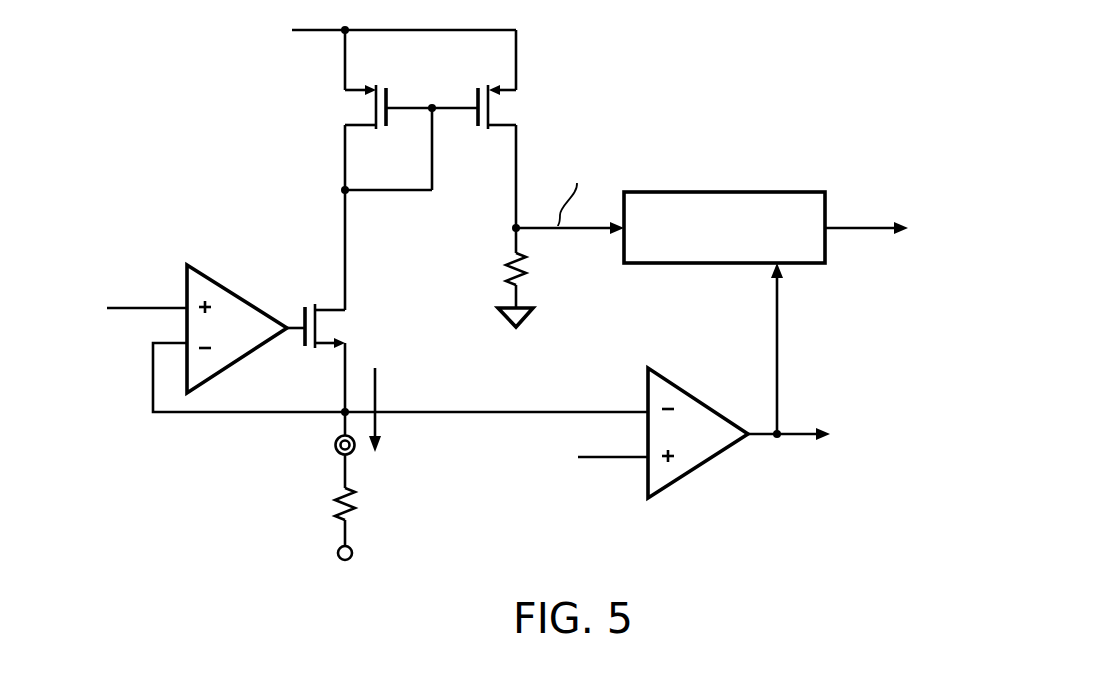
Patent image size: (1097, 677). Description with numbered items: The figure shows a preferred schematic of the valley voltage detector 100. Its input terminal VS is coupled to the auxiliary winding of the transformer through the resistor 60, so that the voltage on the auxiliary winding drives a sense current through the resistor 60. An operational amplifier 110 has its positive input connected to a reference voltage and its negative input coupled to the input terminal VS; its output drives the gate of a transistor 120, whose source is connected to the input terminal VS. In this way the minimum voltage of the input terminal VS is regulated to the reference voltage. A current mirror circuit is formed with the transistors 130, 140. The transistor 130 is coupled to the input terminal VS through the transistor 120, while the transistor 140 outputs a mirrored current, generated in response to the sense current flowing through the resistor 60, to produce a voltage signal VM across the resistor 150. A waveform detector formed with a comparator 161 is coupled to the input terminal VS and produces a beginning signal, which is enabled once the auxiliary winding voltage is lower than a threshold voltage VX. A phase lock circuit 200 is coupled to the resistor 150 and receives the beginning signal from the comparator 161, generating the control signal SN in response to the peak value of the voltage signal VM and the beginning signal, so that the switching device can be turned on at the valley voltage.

The valley voltage detector 100 is at (918, 18).
The operational amplifier 110 is at (237, 288).
The transistor 120 is at (345, 323).
The transistor 130 is at (350, 107).
The transistor 140 is at (515, 105).
The resistor 150 is at (532, 270).
The comparator 161 is at (702, 472).
The phase lock circuit 200 is at (728, 192).
The resistor 60 is at (362, 507).